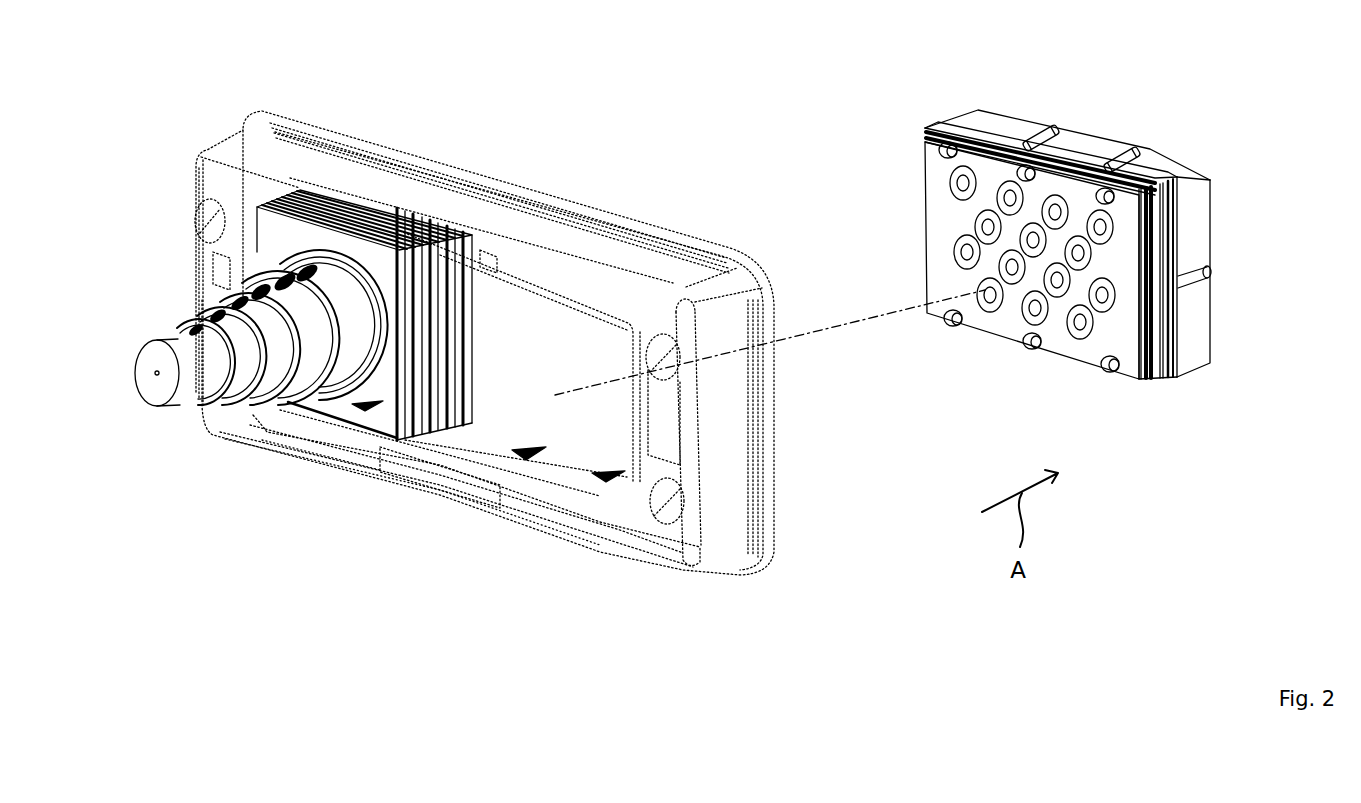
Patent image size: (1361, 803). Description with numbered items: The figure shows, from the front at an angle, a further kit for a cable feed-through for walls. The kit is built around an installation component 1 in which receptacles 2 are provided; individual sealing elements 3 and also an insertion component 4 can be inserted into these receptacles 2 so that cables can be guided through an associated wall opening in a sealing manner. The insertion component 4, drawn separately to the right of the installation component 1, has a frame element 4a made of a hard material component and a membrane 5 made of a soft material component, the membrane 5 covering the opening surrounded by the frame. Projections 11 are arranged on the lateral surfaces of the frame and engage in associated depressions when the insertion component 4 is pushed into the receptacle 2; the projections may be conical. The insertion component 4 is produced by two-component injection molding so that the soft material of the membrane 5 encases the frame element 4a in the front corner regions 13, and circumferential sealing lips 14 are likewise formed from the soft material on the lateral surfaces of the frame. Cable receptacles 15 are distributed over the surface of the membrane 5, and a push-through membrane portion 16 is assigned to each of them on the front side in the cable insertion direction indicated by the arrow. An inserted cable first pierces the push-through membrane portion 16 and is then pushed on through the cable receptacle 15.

The installation component 1 is at (748, 518).
The receptacles 2 is at (590, 435).
The sealing elements 3 is at (343, 245).
The insertion component 4 is at (1114, 280).
The frame element 4a is at (1198, 200).
The membrane 5 is at (1133, 357).
The projections 11 is at (1158, 252).
The front corner regions 13 is at (1073, 157).
The circumferential sealing lips 14 is at (1178, 324).
The cable receptacles 15 is at (988, 300).
The push-through membrane portion 16 is at (1080, 320).